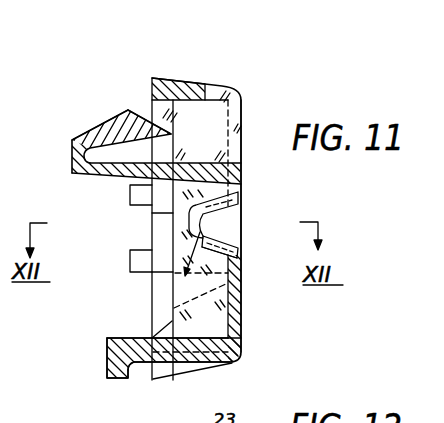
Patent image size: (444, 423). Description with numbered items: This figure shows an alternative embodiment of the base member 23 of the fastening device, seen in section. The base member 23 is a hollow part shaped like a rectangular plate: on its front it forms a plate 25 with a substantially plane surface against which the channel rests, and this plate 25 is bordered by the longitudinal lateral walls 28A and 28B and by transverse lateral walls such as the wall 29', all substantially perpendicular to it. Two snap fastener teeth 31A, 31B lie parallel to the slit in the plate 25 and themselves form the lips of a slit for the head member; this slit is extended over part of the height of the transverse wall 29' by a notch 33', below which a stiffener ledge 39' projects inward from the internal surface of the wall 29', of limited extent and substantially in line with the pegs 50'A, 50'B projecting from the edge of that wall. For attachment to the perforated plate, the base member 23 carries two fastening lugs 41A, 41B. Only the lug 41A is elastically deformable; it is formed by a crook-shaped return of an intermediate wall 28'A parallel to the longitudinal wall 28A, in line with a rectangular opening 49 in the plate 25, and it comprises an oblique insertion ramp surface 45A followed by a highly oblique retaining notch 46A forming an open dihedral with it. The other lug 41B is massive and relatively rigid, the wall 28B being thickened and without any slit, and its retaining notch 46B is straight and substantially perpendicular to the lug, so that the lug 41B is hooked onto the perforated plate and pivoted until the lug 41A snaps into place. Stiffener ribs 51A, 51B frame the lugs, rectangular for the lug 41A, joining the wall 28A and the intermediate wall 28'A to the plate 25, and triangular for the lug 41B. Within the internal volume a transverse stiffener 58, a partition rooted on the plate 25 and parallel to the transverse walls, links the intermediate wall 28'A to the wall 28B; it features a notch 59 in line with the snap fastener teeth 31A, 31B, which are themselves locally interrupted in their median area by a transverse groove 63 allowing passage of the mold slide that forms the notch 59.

The base member 23 is at (225, 63).
The plate 25 is at (242, 117).
The longitudinal wall 28A is at (173, 82).
The longitudinal wall 28B is at (226, 362).
The intermediate wall 28'A is at (222, 211).
The transverse wall 29' is at (130, 286).
The snap fastener tooth 31A is at (240, 209).
The snap fastener tooth 31B is at (229, 232).
The notch 33' is at (194, 266).
The stiffener ledge 39' is at (127, 240).
The fastening lug 41A is at (97, 114).
The fastening lug 41B is at (101, 362).
The oblique insertion ramp surface 45A is at (80, 138).
The retaining notch 46A is at (143, 115).
The retaining notch 46B is at (137, 378).
The rectangular opening 49 is at (228, 157).
The peg 50'A is at (114, 194).
The peg 50'B is at (114, 266).
The stiffener rib 51A is at (207, 123).
The stiffener rib 51B is at (166, 331).
The transverse stiffener 58 is at (215, 331).
The notch 59 is at (152, 213).
The transverse groove 63 is at (241, 259).